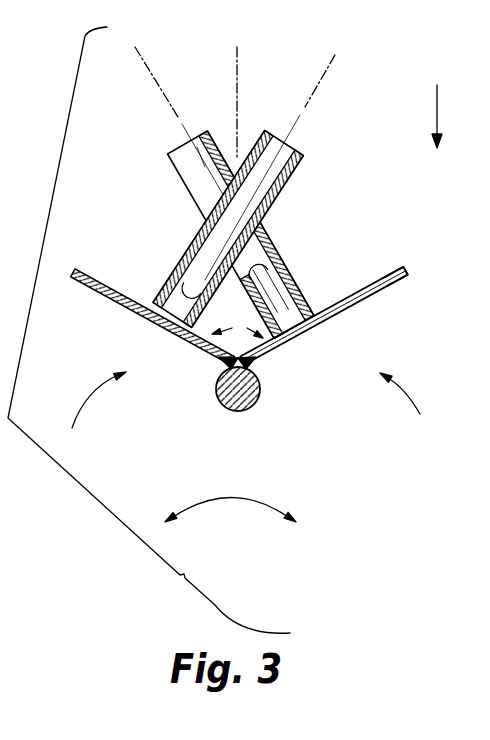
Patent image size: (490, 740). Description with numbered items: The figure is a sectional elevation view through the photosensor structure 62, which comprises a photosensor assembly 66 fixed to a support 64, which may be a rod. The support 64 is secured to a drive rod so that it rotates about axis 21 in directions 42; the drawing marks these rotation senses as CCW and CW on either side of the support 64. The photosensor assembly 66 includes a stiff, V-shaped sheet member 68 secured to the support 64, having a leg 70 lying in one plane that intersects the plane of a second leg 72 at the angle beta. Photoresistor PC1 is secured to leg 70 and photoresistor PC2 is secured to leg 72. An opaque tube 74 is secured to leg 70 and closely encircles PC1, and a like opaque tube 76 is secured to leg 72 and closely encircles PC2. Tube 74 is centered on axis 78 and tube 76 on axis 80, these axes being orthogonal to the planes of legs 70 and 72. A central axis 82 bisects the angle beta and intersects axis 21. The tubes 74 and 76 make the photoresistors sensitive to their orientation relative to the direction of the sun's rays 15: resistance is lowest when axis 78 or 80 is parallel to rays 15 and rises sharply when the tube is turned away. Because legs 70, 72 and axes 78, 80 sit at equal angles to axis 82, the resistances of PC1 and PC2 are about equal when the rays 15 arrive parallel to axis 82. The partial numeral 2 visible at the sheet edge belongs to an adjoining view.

The photosensor structure 62 is at (408, 236).
The support 64 is at (256, 396).
The photosensor assembly 66 is at (148, 283).
The sheet member 68 is at (348, 298).
The leg 70 is at (385, 277).
The second leg 72 is at (127, 303).
The opaque tube 74 is at (255, 231).
The opaque tube 76 is at (213, 221).
The axis 78 is at (151, 76).
The axis 80 is at (322, 82).
The axis 82 is at (237, 86).
The sun's rays 15 is at (437, 112).
The axis 21 is at (238, 603).
The directions 42 is at (237, 500).
The photoresistor PC1 is at (261, 307).
The photoresistor PC2 is at (190, 276).
The counterclockwise rotation CCW is at (90, 401).
The clockwise rotation CW is at (394, 380).
The partial numeral at sheet edge 2 is at (3, 562).